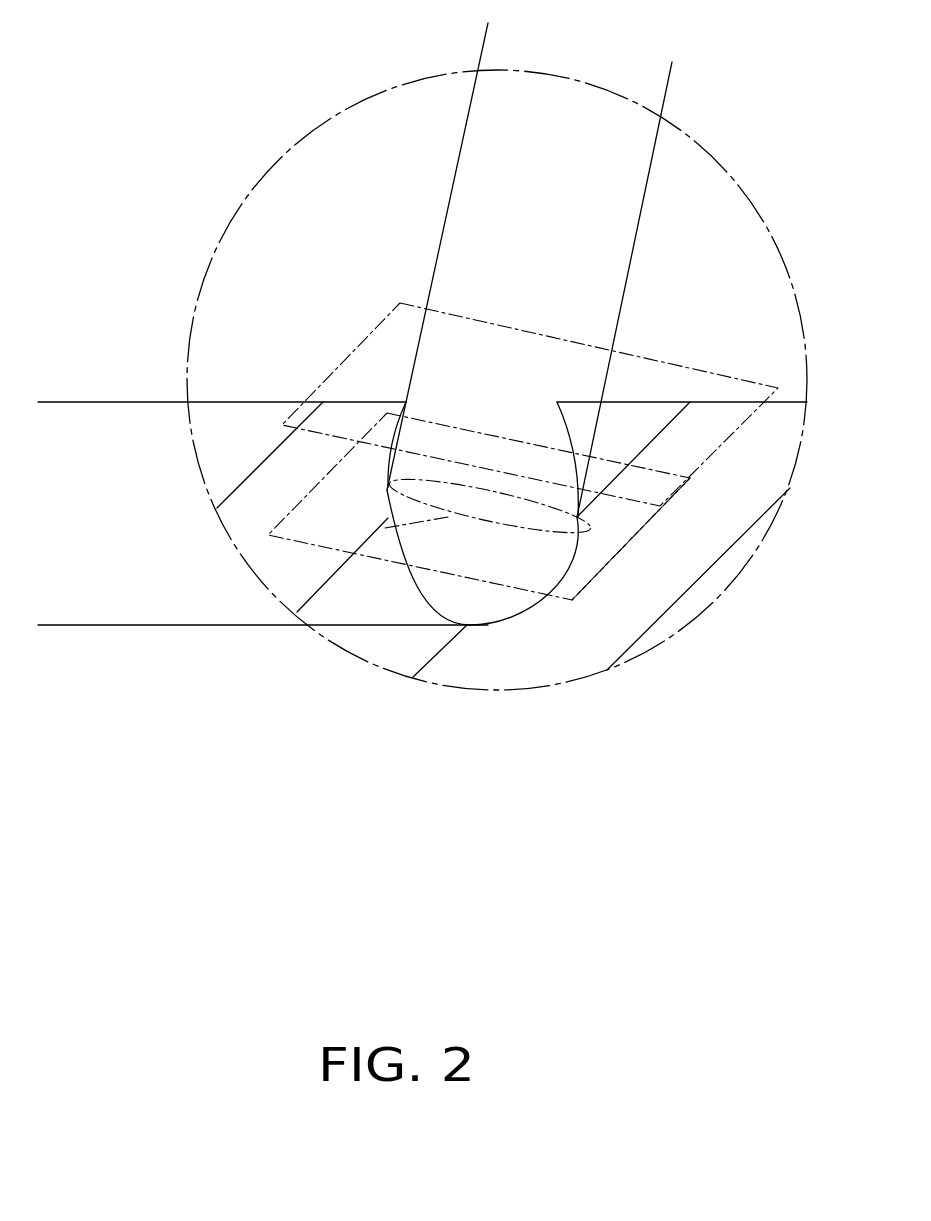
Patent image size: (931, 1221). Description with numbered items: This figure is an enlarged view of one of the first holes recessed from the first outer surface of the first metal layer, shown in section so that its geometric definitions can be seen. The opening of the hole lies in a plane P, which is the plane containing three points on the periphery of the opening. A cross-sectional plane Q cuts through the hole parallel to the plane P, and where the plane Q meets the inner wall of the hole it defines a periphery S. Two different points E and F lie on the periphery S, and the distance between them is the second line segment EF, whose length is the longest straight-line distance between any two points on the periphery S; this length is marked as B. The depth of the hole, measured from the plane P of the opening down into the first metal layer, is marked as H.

The length of second line segment EF B is at (670, 72).
The depth of first hole H is at (46, 403).
The plane of the opening P is at (375, 360).
The point on periphery S E is at (450, 478).
The cross-sectional plane of first hole Q is at (327, 517).
The periphery of cross-section S is at (313, 545).
The point on periphery S F is at (587, 527).